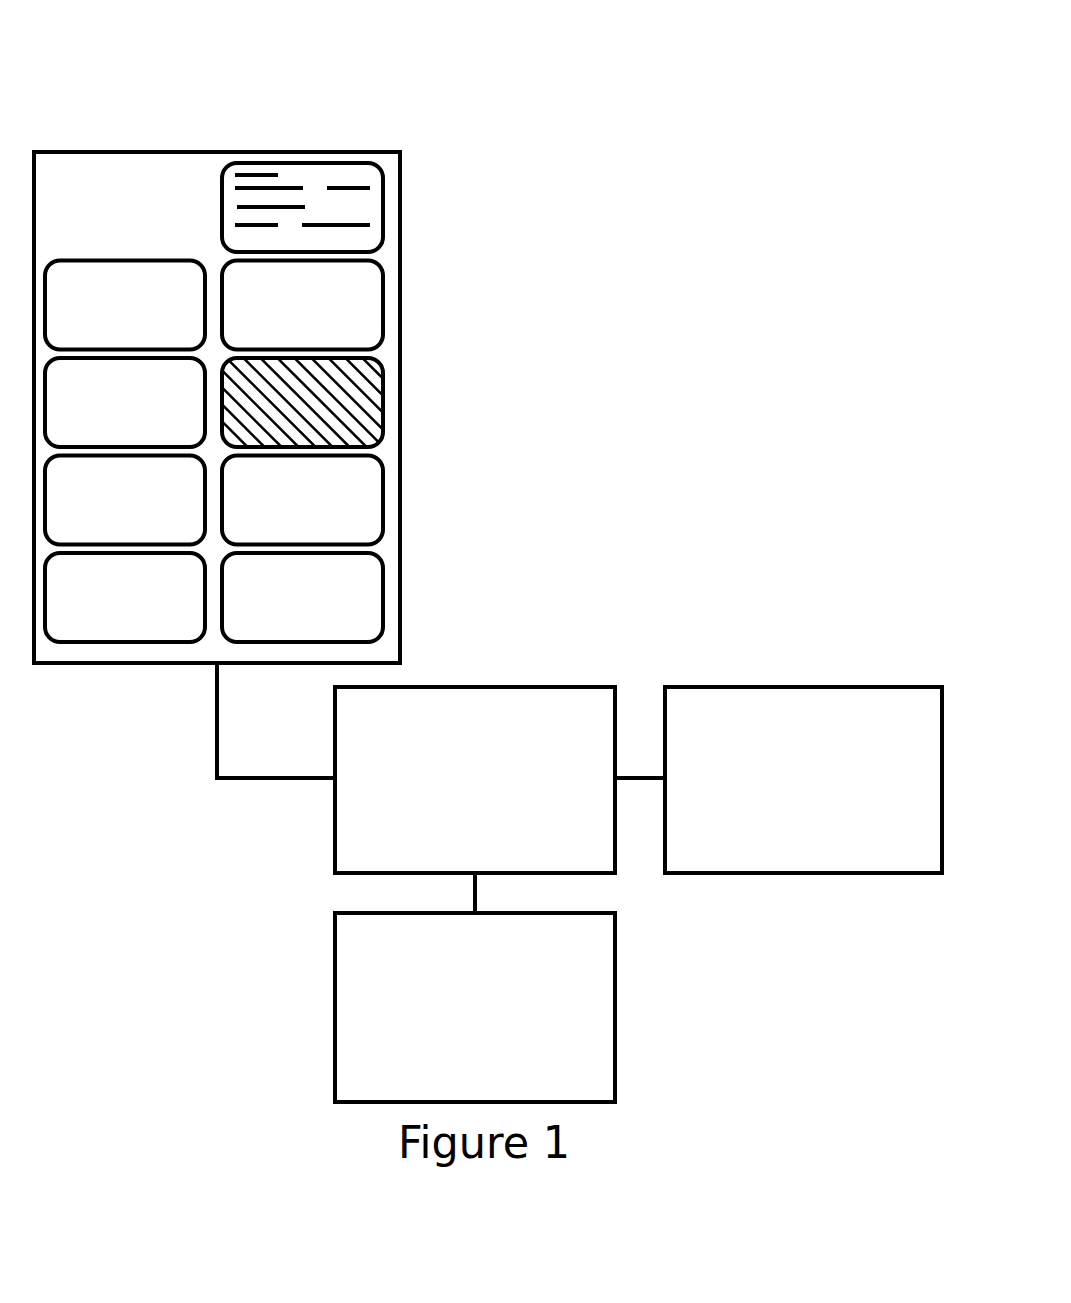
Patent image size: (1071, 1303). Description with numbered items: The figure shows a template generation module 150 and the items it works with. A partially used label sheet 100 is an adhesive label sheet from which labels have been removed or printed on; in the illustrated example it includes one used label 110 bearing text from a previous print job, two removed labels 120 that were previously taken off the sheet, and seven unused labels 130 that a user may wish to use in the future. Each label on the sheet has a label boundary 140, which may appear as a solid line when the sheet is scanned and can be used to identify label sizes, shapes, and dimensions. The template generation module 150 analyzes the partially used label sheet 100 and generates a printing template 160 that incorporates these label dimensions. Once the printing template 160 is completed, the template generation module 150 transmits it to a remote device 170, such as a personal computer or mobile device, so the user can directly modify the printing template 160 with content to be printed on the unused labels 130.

The partially used label sheet 100 is at (303, 102).
The used label 110 is at (350, 207).
The removed label 120 is at (350, 411).
The unused label 130 is at (348, 608).
The label boundary 140 is at (123, 642).
The template generation module 150 is at (570, 844).
The printing template 160 is at (913, 821).
The remote device 170 is at (565, 1049).